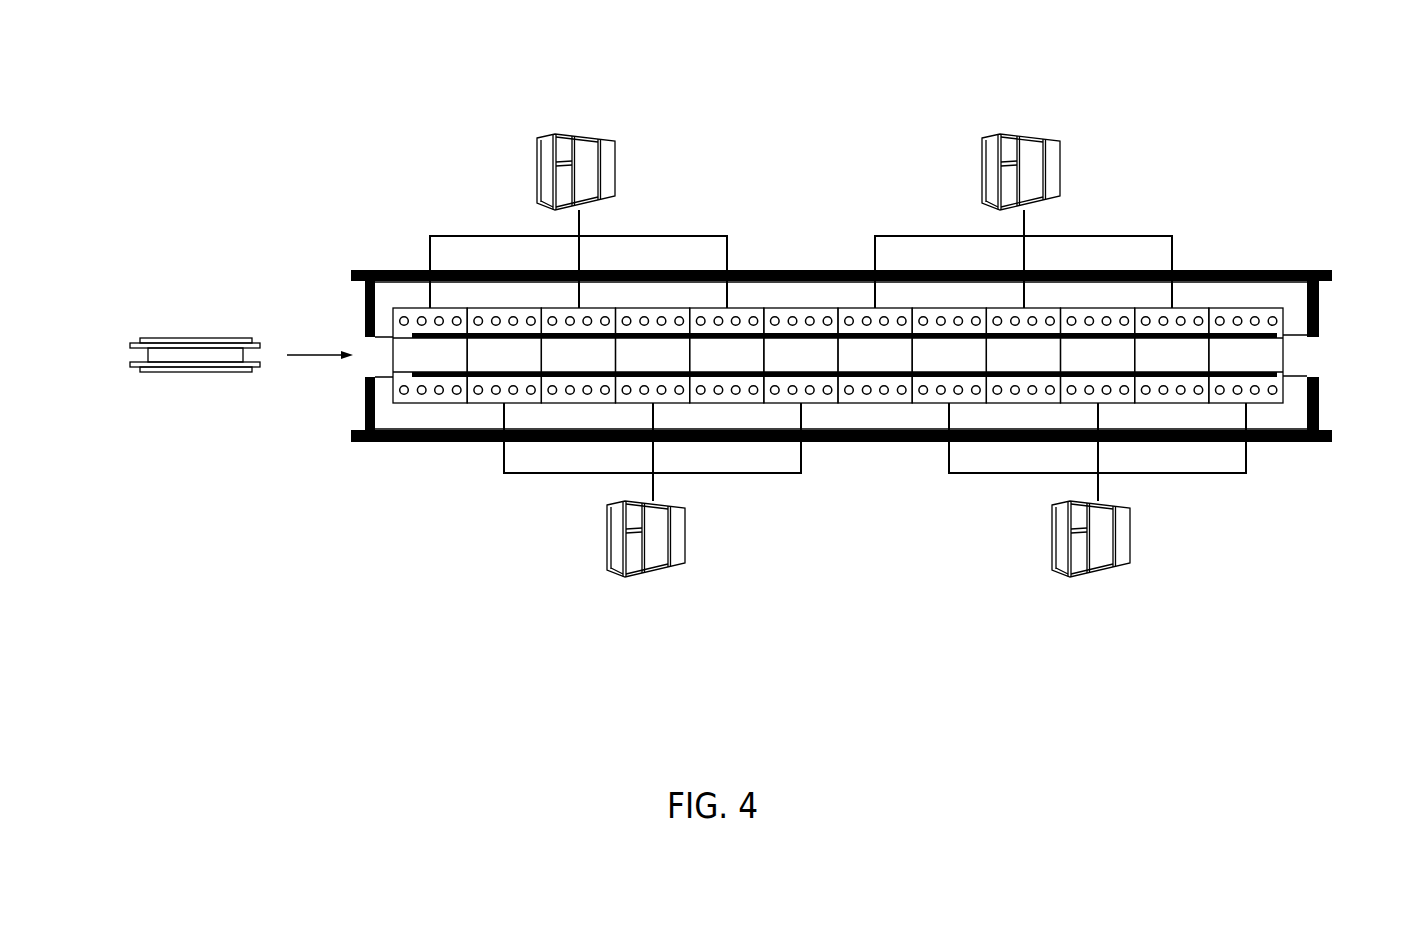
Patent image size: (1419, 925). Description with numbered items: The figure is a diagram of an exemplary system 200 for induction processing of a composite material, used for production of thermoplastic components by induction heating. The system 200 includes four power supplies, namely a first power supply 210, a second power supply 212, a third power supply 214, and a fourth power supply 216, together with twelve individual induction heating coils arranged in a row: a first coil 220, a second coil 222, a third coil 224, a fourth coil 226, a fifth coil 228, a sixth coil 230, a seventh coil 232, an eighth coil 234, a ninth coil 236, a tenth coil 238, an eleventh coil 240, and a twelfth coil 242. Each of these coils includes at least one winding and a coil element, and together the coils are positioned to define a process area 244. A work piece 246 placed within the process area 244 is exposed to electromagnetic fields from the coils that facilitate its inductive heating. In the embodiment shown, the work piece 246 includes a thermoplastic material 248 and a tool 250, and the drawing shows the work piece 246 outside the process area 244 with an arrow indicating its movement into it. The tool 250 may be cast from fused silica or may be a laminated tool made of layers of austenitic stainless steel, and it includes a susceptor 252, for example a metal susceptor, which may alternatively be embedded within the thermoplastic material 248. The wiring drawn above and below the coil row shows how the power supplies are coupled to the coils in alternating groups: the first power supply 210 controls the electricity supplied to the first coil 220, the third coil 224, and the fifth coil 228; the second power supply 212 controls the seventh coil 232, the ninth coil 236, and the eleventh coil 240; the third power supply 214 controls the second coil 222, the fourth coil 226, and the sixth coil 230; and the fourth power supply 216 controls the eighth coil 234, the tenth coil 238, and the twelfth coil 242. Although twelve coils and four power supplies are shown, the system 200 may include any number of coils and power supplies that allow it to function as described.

The system 200 is at (1097, 73).
The first power supply 210 is at (615, 168).
The second power supply 212 is at (1060, 168).
The third power supply 214 is at (685, 535).
The fourth power supply 216 is at (1130, 535).
The first coil 220 is at (400, 403).
The second coil 222 is at (513, 403).
The third coil 224 is at (585, 403).
The fourth coil 226 is at (659, 403).
The fifth coil 228 is at (733, 403).
The sixth coil 230 is at (807, 403).
The seventh coil 232 is at (881, 403).
The eighth coil 234 is at (956, 403).
The ninth coil 236 is at (1030, 403).
The tenth coil 238 is at (1107, 403).
The eleventh coil 240 is at (1179, 403).
The twelfth coil 242 is at (1253, 403).
The process area 244 is at (1307, 357).
The work piece 246 is at (128, 275).
The thermoplastic material 248 is at (245, 355).
The tool 250 is at (232, 338).
The susceptor 252 is at (130, 346).